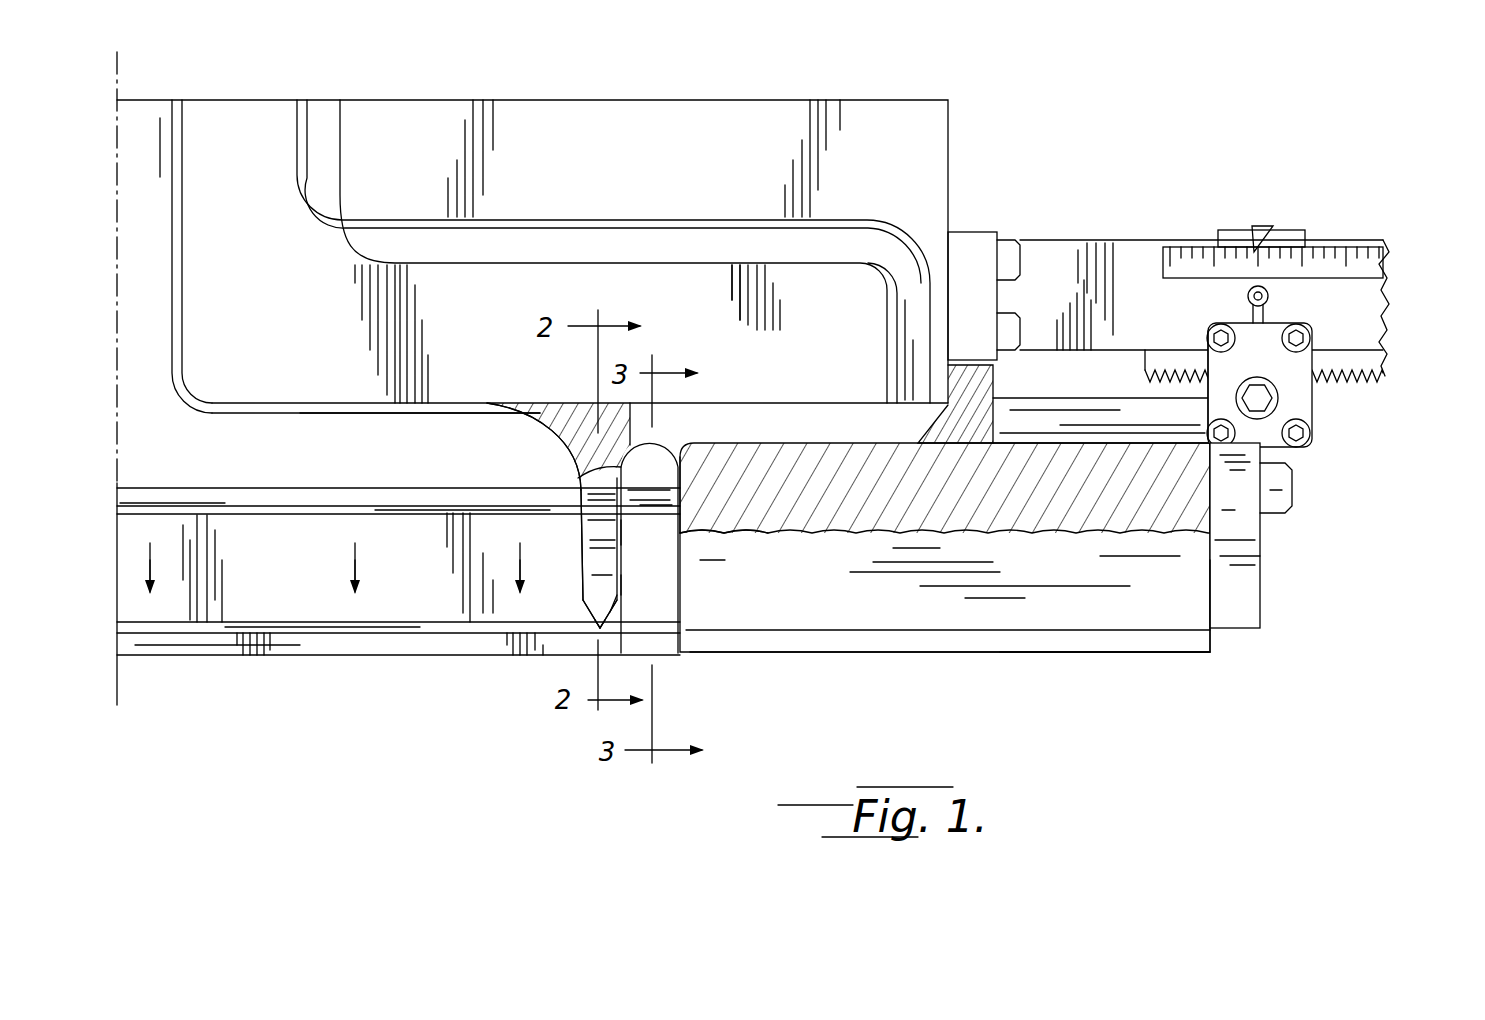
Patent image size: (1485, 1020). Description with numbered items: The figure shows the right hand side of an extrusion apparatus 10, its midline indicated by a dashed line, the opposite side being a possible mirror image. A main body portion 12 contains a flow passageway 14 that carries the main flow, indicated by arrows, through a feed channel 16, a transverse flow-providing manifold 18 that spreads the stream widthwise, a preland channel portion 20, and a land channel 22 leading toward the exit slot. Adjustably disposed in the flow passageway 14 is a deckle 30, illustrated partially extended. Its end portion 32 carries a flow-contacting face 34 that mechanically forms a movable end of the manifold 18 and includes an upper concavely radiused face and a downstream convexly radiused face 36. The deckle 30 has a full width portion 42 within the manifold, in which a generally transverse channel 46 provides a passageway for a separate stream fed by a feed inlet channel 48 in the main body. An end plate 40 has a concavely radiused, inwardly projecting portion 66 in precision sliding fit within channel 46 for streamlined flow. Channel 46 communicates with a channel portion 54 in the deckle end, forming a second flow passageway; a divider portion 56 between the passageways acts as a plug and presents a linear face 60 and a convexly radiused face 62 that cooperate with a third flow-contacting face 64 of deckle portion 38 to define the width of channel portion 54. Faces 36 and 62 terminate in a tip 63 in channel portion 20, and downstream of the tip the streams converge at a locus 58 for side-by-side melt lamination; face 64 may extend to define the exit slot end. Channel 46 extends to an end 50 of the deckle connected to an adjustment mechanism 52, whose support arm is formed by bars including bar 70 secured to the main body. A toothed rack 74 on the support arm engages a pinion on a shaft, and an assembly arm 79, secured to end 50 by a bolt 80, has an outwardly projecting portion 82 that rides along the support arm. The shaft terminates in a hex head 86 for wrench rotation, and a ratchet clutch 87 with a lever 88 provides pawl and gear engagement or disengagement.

The extrusion apparatus 10 is at (910, 66).
The body portion 12 is at (460, 107).
The flow passageway 14 is at (145, 127).
The feed channel 16 is at (157, 318).
The transverse flow-providing manifold 18 is at (312, 442).
The channel portion 20 is at (262, 580).
The land channel 22 is at (290, 655).
The deckle 30 is at (553, 400).
The end portion 32 is at (587, 537).
The flow-contacting face 34 is at (530, 434).
The convexly radiused face 36 is at (587, 610).
The deckle portion 38 is at (805, 610).
The end plate 40 is at (1001, 382).
The full width portion 42 is at (855, 500).
The channel 46 is at (740, 420).
The feed inlet channel 48 is at (702, 245).
The end 50 is at (1198, 600).
The adjustment mechanism 52 is at (1352, 217).
The channel portion 54 is at (636, 477).
The divider portion 56 is at (583, 479).
The locus 58 is at (598, 630).
The linear face 60 is at (620, 533).
The convexly radiused face 62 is at (620, 585).
The tip 63 is at (617, 602).
The third flow-contacting face 64 is at (682, 568).
The inwardly projecting portion 66 is at (921, 430).
The bar 70 is at (1065, 248).
The toothed rack 74 is at (1360, 381).
The assembly arm 79 is at (1245, 560).
The bolt 80 is at (1295, 487).
The outwardly projecting portion 82 is at (1232, 228).
The hex head 86 is at (1268, 400).
The ratchet clutch 87 is at (1230, 321).
The lever 88 is at (1270, 296).